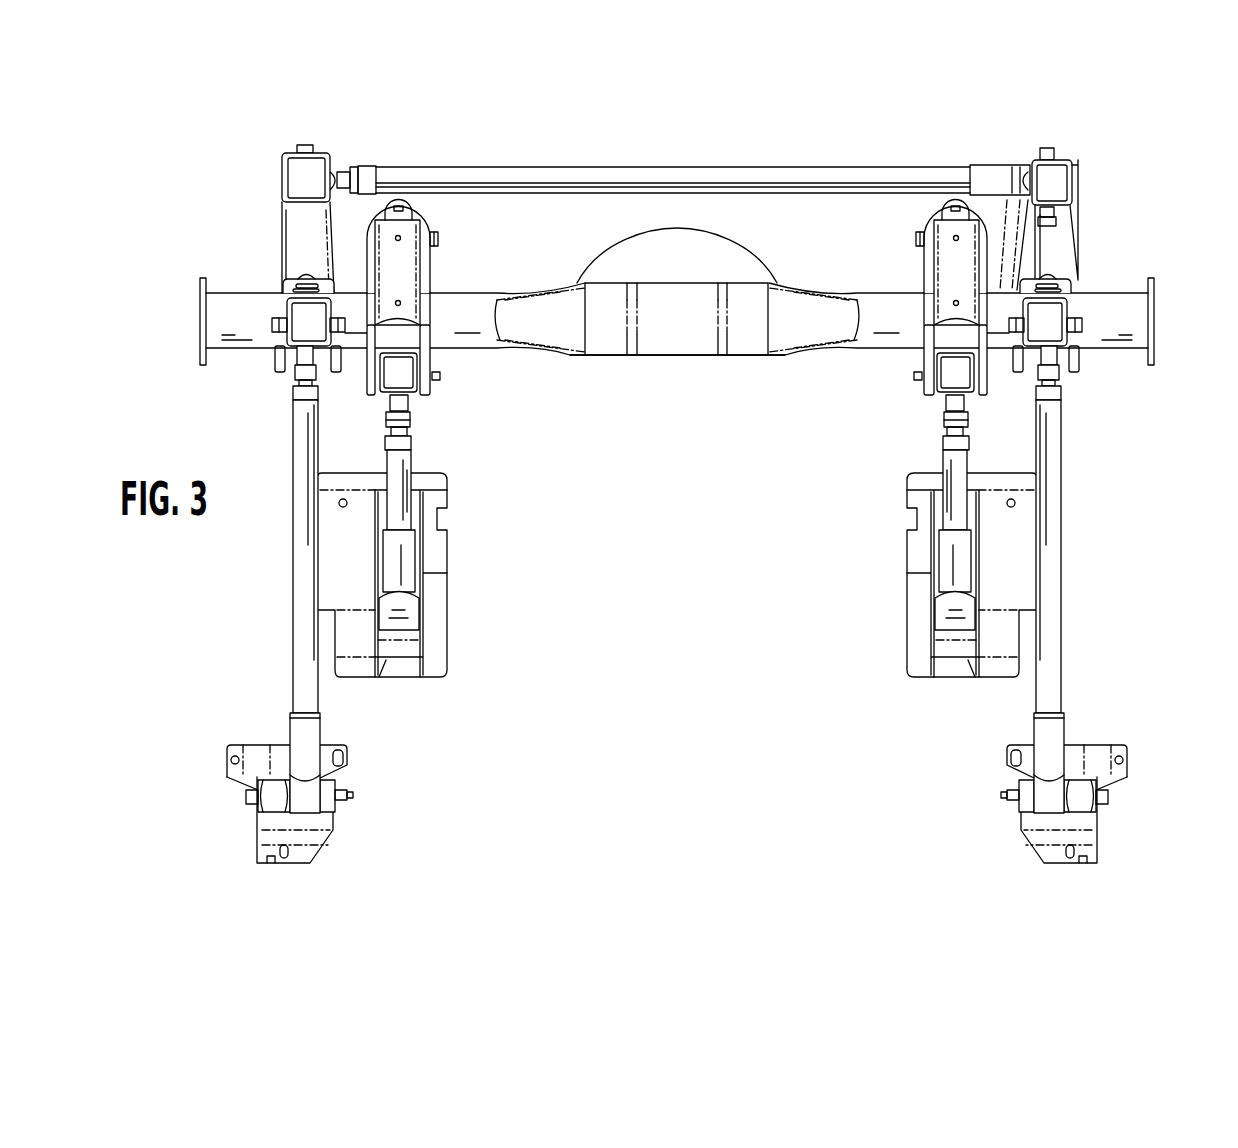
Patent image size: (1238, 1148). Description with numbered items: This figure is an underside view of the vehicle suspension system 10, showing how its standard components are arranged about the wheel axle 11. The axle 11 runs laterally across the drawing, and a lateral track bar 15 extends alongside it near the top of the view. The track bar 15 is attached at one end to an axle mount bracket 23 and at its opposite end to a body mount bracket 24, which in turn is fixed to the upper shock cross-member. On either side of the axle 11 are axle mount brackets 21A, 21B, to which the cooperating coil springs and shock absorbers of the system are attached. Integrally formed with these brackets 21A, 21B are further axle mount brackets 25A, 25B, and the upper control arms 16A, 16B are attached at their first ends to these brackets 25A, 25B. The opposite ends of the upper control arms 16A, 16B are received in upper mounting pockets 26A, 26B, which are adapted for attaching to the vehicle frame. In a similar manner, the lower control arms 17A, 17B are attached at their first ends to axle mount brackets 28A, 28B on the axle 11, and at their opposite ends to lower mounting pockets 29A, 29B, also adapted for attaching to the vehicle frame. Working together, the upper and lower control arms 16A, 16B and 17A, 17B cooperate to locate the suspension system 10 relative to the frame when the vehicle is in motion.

The suspension system 10 is at (228, 201).
The wheel axle 11 is at (532, 350).
The lateral track bar 15 is at (530, 168).
The upper control arm 16A is at (398, 500).
The upper control arm 16B is at (950, 503).
The lower control arm 17A is at (292, 656).
The lower control arm 17B is at (1042, 568).
The axle mount bracket 21A is at (416, 270).
The axle mount bracket 21B is at (950, 272).
The axle mount bracket 23 is at (283, 200).
The body mount bracket 24 is at (1079, 180).
The axle mount bracket 25A is at (438, 385).
The axle mount bracket 25B is at (916, 385).
The upper mounting pocket 26A is at (437, 634).
The upper mounting pocket 26B is at (941, 670).
The axle mount bracket 28A is at (284, 285).
The axle mount bracket 28B is at (1062, 290).
The lower mounting pocket 29A is at (250, 815).
The lower mounting pocket 29B is at (1104, 815).